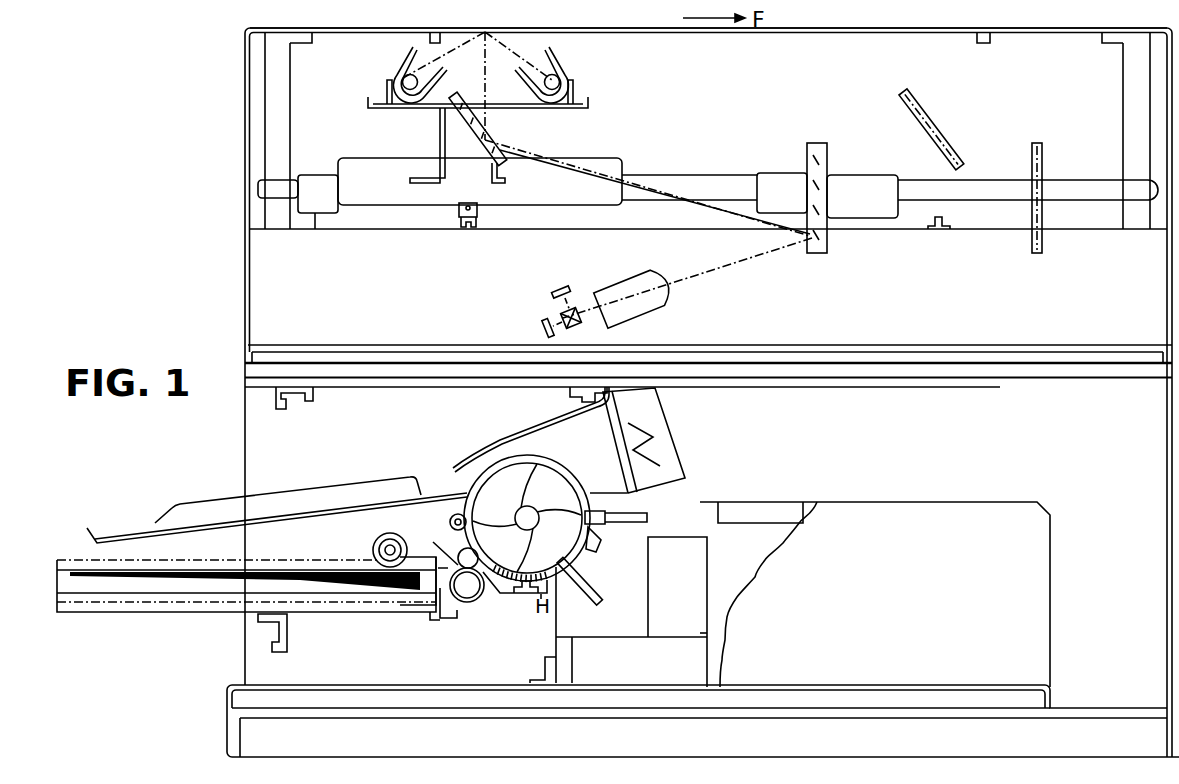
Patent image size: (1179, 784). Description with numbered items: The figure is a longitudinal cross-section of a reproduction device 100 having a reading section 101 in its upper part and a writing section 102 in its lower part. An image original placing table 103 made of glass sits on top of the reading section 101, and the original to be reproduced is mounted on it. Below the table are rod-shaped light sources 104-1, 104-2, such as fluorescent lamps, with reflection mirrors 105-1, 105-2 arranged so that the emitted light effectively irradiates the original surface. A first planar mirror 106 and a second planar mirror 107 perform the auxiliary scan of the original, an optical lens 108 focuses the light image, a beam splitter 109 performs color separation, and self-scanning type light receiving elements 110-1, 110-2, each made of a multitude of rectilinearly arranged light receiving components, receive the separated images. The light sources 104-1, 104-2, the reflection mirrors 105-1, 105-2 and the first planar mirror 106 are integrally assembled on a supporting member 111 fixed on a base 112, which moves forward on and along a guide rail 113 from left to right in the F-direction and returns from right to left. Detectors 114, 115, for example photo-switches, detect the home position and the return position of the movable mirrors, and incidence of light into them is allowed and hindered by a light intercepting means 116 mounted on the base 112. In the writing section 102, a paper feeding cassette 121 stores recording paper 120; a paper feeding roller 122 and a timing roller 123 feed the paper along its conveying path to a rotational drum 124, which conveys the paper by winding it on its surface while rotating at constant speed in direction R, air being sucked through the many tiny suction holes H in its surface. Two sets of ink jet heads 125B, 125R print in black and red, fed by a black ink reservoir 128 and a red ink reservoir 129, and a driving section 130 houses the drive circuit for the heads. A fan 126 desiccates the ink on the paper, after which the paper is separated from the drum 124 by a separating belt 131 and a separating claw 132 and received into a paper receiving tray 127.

The reproduction device 100 is at (243, 128).
The reading section 101 is at (235, 240).
The writing section 102 is at (235, 441).
The image original placing table 103 is at (667, 30).
The rod-shaped light source 104-1 is at (415, 60).
The rod-shaped light source 104-2 is at (561, 83).
The reflection mirror 105-1 is at (399, 80).
The reflection mirror 105-2 is at (549, 64).
The first planar mirror 106 is at (493, 142).
The second planar mirror 107 is at (808, 150).
The optical lens 108 is at (668, 303).
The beam splitter 109 is at (560, 312).
The self-scanning type light receiving element 110-1 is at (558, 289).
The self-scanning type light receiving element 110-2 is at (543, 328).
The supporting member 111 is at (439, 130).
The base 112 is at (598, 158).
The guide rail 113 is at (693, 185).
The detector 114 is at (468, 231).
The detector 115 is at (940, 230).
The light intercepting means 116 is at (469, 203).
The recording paper 120 is at (177, 587).
The paper feeding cassette 121 is at (213, 612).
The paper feeding roller 122 is at (373, 541).
The timing roller 123 is at (481, 598).
The rotational drum 124 is at (556, 458).
The ink jet head 125R is at (646, 520).
The ink jet head 125B is at (597, 592).
The fan 126 is at (666, 457).
The paper receiving tray 127 is at (153, 533).
The black ink reservoir 128 is at (700, 662).
The red ink reservoir 129 is at (703, 568).
The driving section 130 is at (779, 503).
The separating belt 131 is at (452, 533).
The separating claw 132 is at (466, 489).